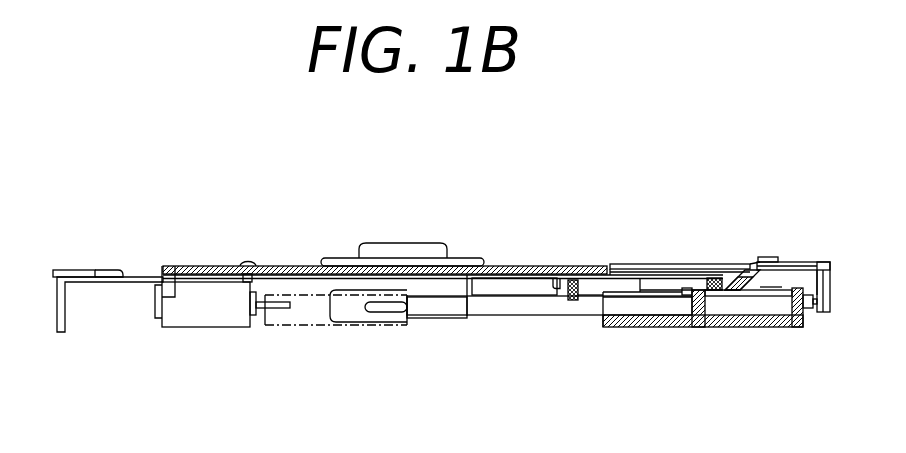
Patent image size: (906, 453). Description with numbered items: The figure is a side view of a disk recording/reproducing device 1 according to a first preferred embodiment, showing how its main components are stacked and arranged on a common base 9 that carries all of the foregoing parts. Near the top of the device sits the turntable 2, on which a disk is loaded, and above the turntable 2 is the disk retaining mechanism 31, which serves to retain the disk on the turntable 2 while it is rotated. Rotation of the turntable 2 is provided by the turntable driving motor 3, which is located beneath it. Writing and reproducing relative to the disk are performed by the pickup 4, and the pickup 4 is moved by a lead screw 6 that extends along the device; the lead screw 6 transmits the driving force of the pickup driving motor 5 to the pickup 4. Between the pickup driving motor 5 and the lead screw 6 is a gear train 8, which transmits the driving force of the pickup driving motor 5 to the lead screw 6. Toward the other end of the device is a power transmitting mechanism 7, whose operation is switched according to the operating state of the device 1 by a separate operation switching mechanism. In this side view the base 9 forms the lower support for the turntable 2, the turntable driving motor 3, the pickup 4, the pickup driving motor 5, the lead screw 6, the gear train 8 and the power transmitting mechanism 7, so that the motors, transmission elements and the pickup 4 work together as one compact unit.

The disk recording/reproducing device 1 is at (104, 252).
The turntable 2 is at (322, 259).
The turntable driving motor 3 is at (450, 316).
The pickup 4 is at (647, 327).
The pickup driving motor 5 is at (200, 325).
The lead screw 6 is at (506, 317).
The power transmitting mechanism 7 is at (652, 265).
The gear train 8 is at (298, 327).
The base 9 is at (140, 270).
The disk retaining mechanism 31 is at (446, 247).